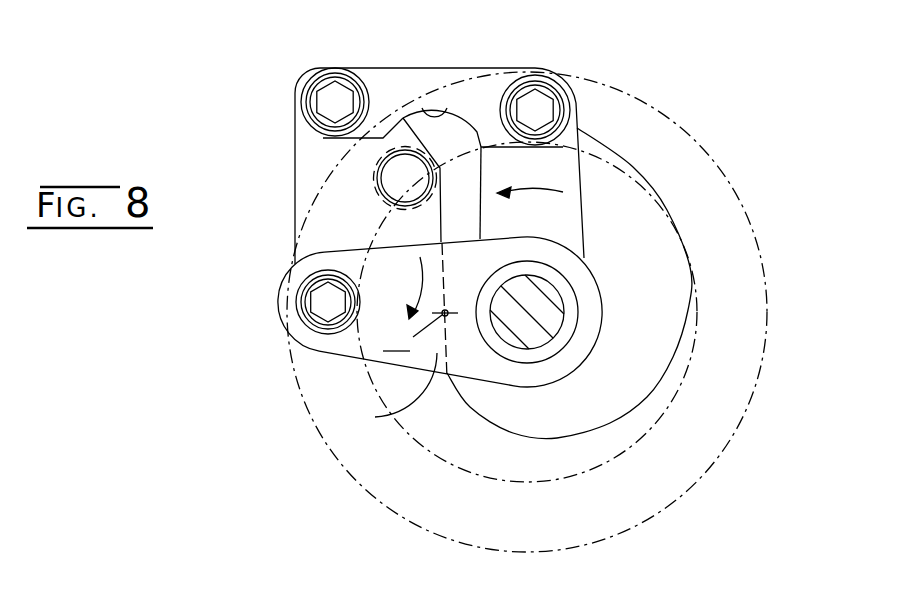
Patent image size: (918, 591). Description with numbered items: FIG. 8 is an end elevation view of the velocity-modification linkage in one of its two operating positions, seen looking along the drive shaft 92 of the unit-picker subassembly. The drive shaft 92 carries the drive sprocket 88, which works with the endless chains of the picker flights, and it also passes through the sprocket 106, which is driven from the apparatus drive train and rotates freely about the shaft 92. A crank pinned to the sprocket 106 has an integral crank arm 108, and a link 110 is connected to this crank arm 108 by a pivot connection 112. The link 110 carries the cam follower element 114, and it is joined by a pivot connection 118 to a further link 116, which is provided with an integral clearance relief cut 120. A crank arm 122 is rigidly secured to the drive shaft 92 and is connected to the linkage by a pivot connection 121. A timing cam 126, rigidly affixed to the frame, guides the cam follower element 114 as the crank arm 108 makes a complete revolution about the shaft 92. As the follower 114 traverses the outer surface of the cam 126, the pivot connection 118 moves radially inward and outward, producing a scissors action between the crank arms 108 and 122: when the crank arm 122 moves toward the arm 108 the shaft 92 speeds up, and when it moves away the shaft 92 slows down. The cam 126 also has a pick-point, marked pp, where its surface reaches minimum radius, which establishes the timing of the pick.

The drive sprocket 88 is at (620, 93).
The sprocket 106 is at (697, 343).
The link 116 is at (398, 85).
The link 110 is at (333, 218).
The clearance relief cut 120 is at (423, 108).
The crank arm 122 is at (614, 201).
The pivot connection 118 is at (308, 100).
The pivot connection 121 is at (537, 88).
The pivot connection 112 is at (303, 323).
The cam follower element 114 is at (372, 168).
The crank arm 108 is at (393, 413).
The drive shaft 92 is at (553, 305).
The timing cam 126 is at (613, 220).